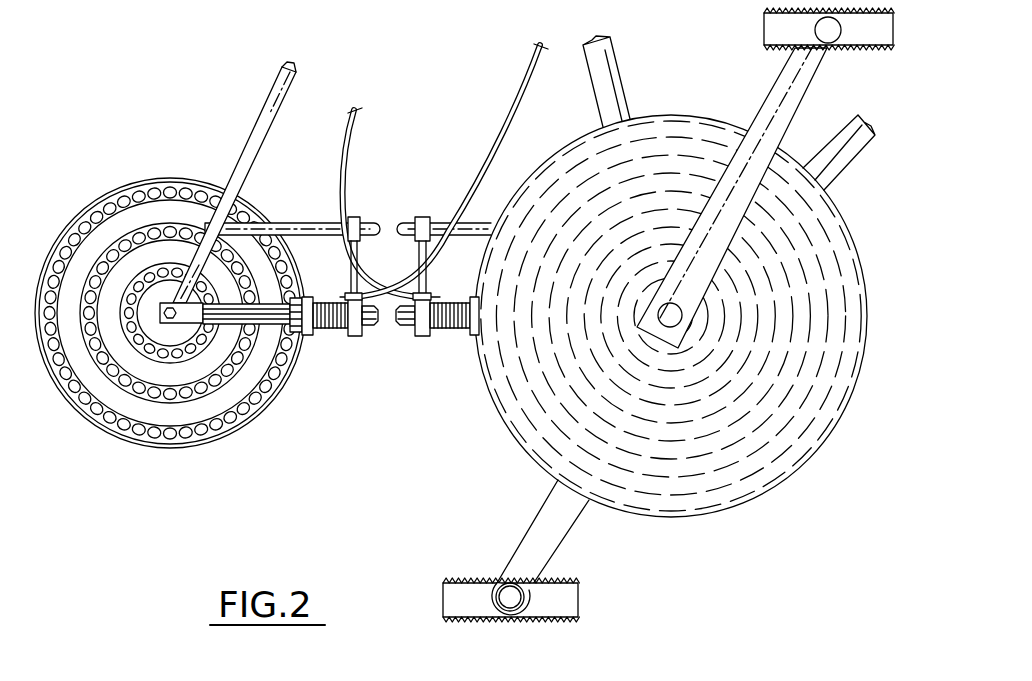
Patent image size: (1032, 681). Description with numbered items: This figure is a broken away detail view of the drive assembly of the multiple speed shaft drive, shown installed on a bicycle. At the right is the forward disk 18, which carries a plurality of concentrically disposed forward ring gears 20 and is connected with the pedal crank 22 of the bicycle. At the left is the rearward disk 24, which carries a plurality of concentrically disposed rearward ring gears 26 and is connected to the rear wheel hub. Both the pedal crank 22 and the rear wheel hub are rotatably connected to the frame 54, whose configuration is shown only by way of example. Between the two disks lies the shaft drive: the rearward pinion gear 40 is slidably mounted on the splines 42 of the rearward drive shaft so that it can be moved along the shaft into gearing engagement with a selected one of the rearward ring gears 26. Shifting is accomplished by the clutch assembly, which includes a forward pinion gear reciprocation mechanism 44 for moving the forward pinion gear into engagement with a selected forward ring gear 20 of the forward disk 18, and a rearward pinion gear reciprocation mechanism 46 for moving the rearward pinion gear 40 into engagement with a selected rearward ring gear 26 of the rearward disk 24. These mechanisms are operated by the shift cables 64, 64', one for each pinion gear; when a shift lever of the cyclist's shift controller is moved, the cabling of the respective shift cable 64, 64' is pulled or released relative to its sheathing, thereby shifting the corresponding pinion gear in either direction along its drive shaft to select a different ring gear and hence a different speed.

The forward disk 18 is at (718, 516).
The forward ring gears 20 is at (760, 449).
The pedal crank 22 is at (567, 537).
The rearward disk 24 is at (223, 441).
The rearward ring gears 26 is at (140, 352).
The rearward pinion gear 40 is at (283, 332).
The splines 42 is at (217, 332).
The forward pinion gear reciprocation mechanism 44 is at (422, 337).
The rearward pinion gear reciprocation mechanism 46 is at (357, 337).
The frame 54 is at (315, 223).
The shift cable 64 is at (400, 200).
The shift cable 64' is at (444, 170).